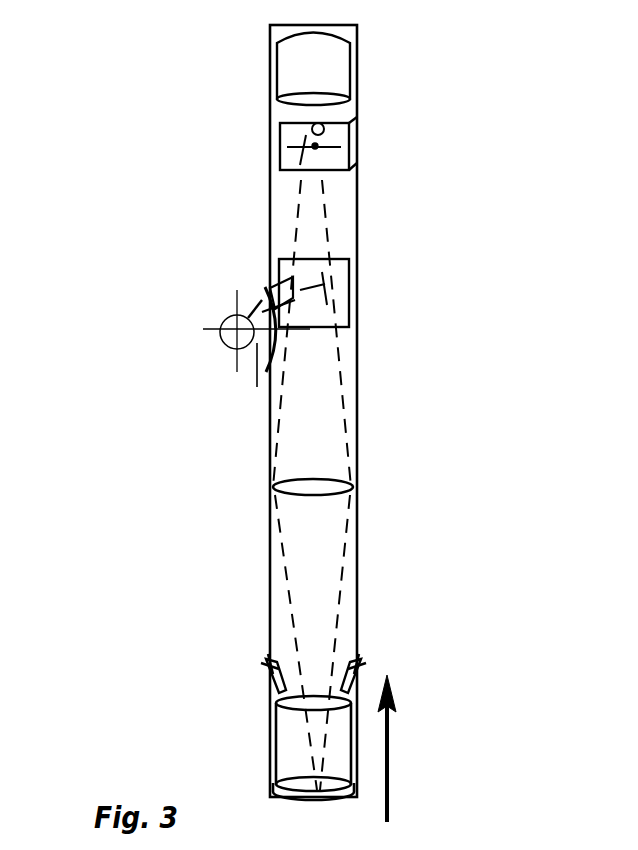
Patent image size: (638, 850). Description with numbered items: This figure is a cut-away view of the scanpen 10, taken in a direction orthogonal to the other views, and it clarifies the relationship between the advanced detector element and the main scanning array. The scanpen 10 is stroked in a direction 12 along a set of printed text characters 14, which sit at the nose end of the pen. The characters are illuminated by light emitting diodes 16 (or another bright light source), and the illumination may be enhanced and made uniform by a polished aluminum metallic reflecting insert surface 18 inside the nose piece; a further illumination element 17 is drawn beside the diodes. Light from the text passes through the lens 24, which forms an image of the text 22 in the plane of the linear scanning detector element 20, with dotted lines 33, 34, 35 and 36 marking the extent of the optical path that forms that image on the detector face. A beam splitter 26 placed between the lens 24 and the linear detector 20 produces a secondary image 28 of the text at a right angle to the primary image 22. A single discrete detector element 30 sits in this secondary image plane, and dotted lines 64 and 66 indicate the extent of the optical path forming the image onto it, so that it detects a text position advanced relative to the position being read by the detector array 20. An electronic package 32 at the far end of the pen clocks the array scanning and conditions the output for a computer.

The scanpen 10 is at (268, 528).
The direction 12 is at (388, 768).
The text characters 14 is at (315, 785).
The light emitting diodes 16 is at (355, 662).
The clamp 17 is at (265, 662).
The metallic reflecting insert surface 18 is at (300, 740).
The linear scanning detector element 20 is at (333, 147).
The image of the text 22 is at (322, 132).
The lens 24 is at (313, 487).
The beam splitter 26 is at (310, 287).
The secondary image 28 is at (225, 345).
The discrete detector element 30 is at (232, 317).
The electronic package 32 is at (327, 67).
The dotted line 33 is at (340, 600).
The dotted line 34 is at (345, 410).
The dotted line 35 is at (290, 607).
The dotted line 36 is at (271, 413).
The dotted line 64 is at (257, 387).
The dotted line 66 is at (258, 303).